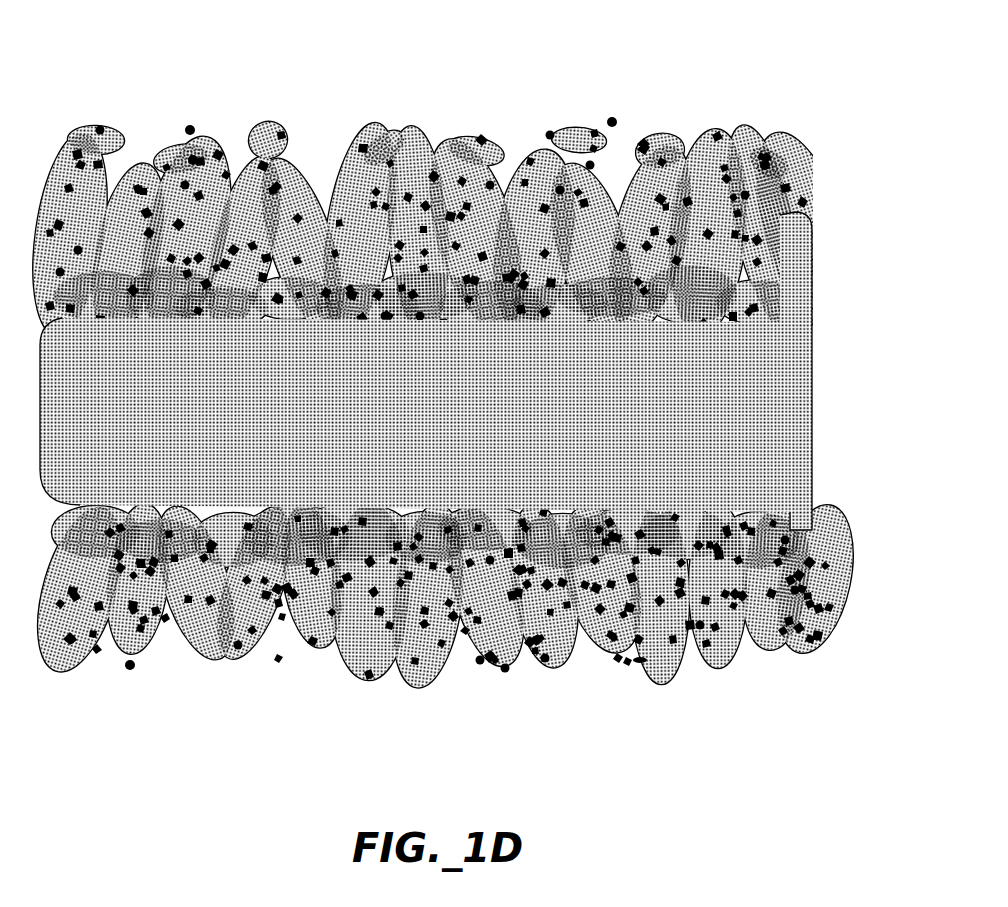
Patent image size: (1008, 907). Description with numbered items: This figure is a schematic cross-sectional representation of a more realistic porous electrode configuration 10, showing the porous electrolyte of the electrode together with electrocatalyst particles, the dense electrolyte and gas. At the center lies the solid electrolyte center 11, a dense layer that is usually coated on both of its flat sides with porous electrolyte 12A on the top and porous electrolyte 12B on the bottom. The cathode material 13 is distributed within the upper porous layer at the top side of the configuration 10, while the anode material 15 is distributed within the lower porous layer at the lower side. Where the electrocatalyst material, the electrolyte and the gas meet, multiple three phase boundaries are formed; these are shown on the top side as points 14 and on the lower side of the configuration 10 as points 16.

The porous electrode configuration 10 is at (467, 406).
The solid electrolyte center 11 is at (840, 330).
The porous electrolyte 12A is at (467, 181).
The porous electrolyte 12B is at (467, 645).
The cathode material 13 is at (546, 145).
The three phase boundaries 14 is at (340, 118).
The anode material 15 is at (690, 672).
The three phase boundaries 16 is at (275, 665).